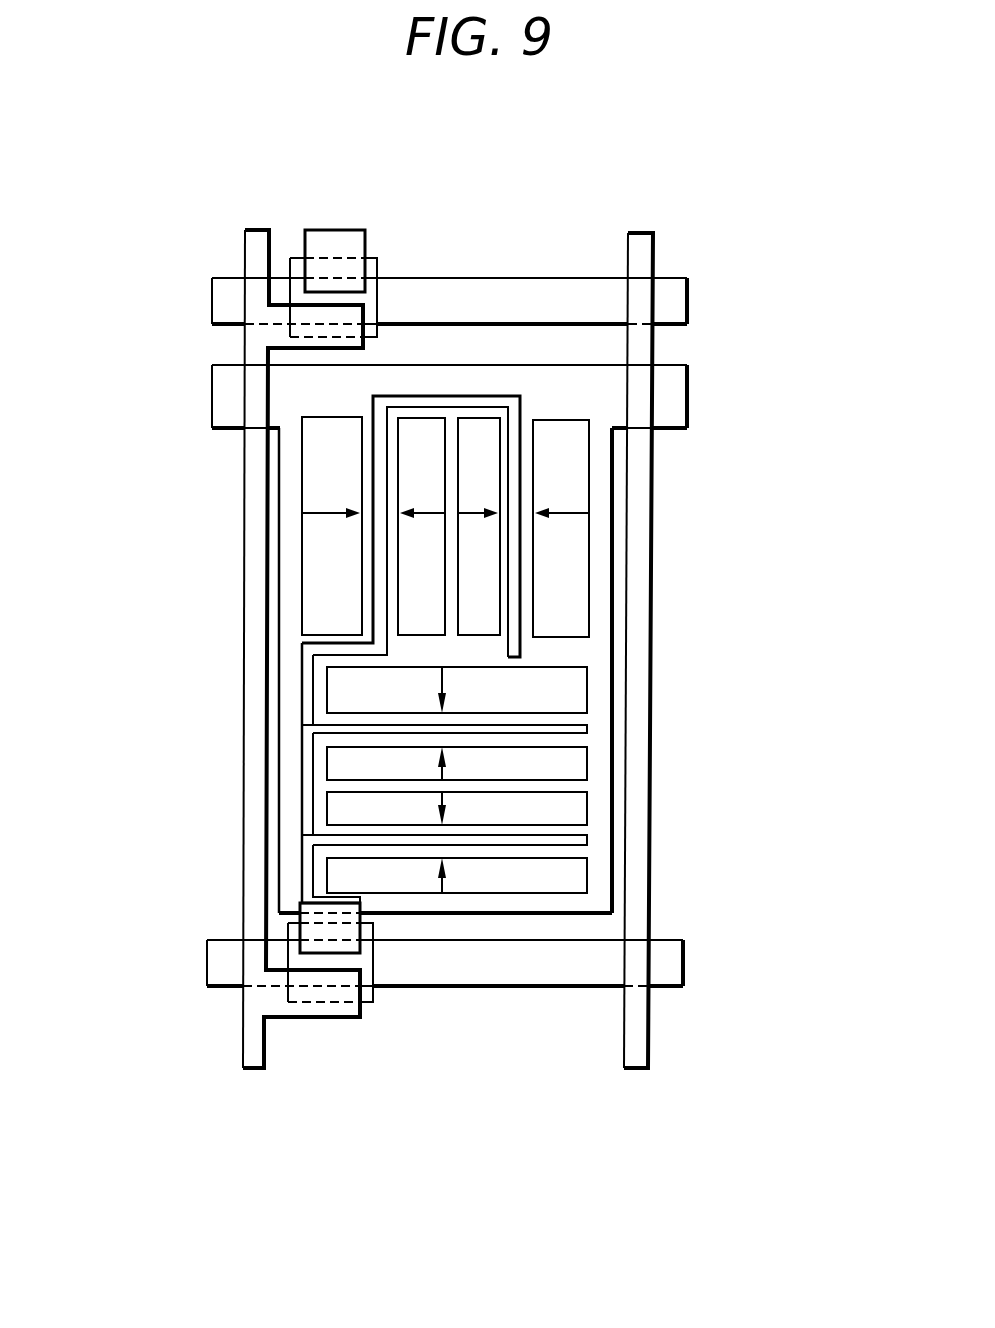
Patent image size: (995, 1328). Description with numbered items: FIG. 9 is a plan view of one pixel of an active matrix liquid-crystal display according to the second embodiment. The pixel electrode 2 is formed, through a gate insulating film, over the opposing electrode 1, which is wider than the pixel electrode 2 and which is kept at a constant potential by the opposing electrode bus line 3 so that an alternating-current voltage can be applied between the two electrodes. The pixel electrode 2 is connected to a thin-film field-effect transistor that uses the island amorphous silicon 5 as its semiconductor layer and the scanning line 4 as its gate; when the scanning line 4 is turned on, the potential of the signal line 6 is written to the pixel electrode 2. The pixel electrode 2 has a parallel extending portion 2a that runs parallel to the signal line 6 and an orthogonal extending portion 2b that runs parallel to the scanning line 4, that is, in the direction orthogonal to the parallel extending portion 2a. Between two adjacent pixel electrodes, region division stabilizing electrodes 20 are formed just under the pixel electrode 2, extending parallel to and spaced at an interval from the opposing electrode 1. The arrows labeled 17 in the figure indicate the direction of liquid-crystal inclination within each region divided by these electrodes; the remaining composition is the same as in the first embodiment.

The opposing electrode 1 is at (533, 492).
The pixel electrode 2 is at (581, 659).
The parallel extending portion 2a is at (513, 565).
The orthogonal extending portion 2b is at (535, 737).
The opposing electrode bus line 3 is at (687, 400).
The scanning line 4 is at (707, 1035).
The island amorphous silicon 5 is at (378, 262).
The signal line 6 is at (252, 1067).
The direction of LC inclination 17 is at (335, 513).
The region division stabilizing electrode 20 is at (440, 573).